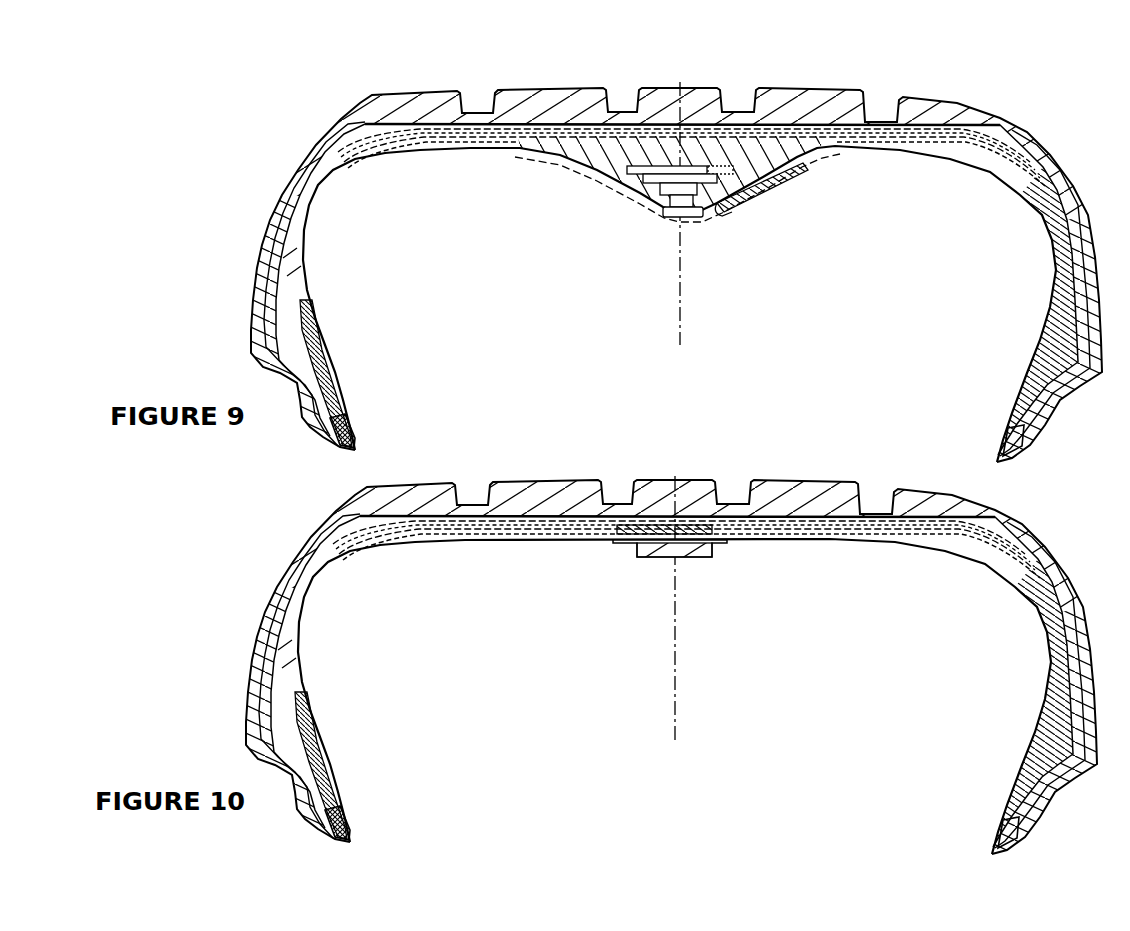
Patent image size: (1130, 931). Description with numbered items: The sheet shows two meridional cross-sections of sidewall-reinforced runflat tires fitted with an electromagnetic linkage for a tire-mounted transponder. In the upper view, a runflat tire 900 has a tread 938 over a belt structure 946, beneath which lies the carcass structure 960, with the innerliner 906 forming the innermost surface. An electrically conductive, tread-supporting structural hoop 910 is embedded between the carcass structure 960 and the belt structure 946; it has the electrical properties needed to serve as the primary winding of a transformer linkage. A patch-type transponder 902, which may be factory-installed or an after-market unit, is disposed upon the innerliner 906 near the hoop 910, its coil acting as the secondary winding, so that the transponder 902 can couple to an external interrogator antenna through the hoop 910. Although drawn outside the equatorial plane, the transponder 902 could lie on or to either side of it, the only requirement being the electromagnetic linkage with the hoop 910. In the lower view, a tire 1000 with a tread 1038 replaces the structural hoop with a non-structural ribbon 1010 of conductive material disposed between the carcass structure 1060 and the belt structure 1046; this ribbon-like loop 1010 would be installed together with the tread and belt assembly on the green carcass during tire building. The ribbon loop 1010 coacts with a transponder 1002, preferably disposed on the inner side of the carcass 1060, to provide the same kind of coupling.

In FIG. 9, the runflat tire 900 is at (905, 73).
In FIG. 9, the tread 938 is at (548, 97).
In FIG. 9, the belt structure 946 is at (788, 140).
In FIG. 9, the carcass structure 960 is at (838, 144).
In FIG. 9, the innerliner 906 is at (812, 148).
In FIG. 9, the patch-type transponder 902 is at (800, 199).
In FIG. 9, the structural hoop 910 is at (697, 215).
In FIG. 10, the tire 1000 is at (872, 476).
In FIG. 10, the tread 1038 is at (557, 498).
In FIG. 10, the ribbon 1010 is at (727, 520).
In FIG. 10, the belt structure 1046 is at (893, 538).
In FIG. 10, the carcass structure 1060 is at (895, 540).
In FIG. 10, the transponder 1002 is at (695, 557).